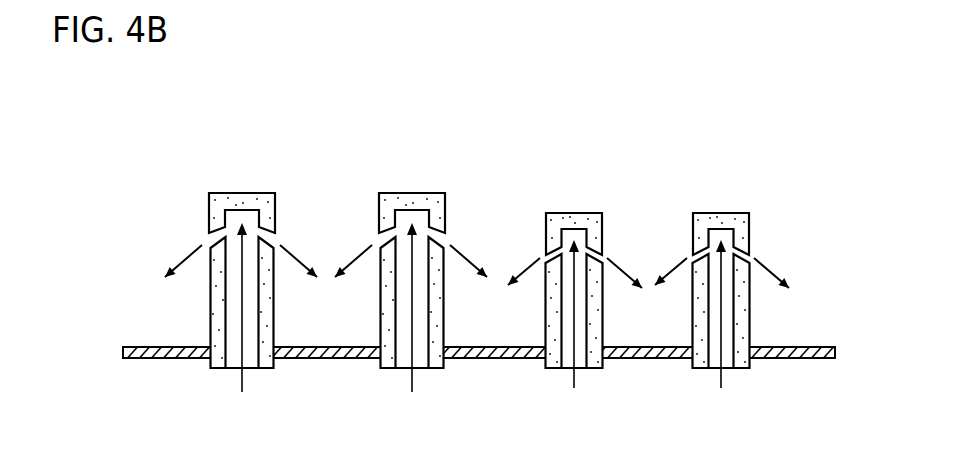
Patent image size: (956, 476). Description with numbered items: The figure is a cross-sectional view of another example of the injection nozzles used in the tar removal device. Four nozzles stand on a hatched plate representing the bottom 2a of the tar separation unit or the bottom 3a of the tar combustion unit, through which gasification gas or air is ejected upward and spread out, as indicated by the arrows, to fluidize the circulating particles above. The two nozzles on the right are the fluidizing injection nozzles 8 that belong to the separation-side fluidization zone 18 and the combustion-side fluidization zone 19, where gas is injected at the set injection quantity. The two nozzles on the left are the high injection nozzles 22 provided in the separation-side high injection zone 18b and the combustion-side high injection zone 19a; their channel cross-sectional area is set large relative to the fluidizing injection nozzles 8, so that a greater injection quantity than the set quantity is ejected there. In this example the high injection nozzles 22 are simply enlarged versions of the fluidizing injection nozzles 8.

The bottom 2a is at (441, 319).
The bottom 3a is at (150, 347).
The fluidizing injection nozzle 8 is at (602, 320).
The separation-side fluidization zone 18 is at (686, 267).
The combustion-side fluidization zone 19 is at (865, 140).
The separation-side high injection zone 18b is at (314, 270).
The combustion-side high injection zone 19a is at (462, 167).
The high injection nozzle 22 is at (207, 327).